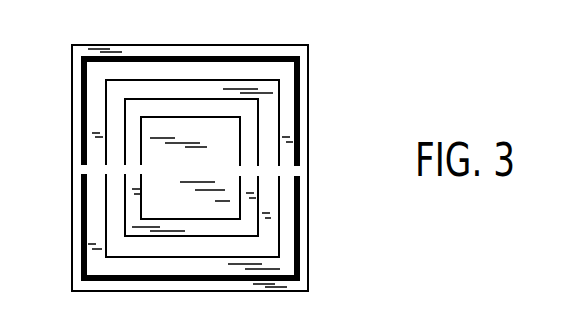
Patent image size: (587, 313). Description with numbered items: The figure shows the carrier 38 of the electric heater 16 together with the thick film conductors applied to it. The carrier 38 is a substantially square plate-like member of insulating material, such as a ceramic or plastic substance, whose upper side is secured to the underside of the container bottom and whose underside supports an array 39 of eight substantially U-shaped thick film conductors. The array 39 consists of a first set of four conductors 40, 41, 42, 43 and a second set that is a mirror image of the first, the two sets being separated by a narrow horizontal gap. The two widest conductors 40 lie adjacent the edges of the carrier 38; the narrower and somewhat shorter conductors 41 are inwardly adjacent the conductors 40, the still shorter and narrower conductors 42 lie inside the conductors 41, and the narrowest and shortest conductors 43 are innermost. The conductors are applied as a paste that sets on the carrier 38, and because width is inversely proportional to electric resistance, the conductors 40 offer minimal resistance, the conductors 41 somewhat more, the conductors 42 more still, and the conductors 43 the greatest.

The electric heater 16 is at (315, 252).
The carrier 38 is at (298, 202).
The array of thick film conductors 39 is at (313, 138).
The thick film conductor 40 is at (245, 59).
The thick film conductor 41 is at (210, 80).
The thick film conductor 42 is at (185, 99).
The thick film conductor 43 is at (160, 117).